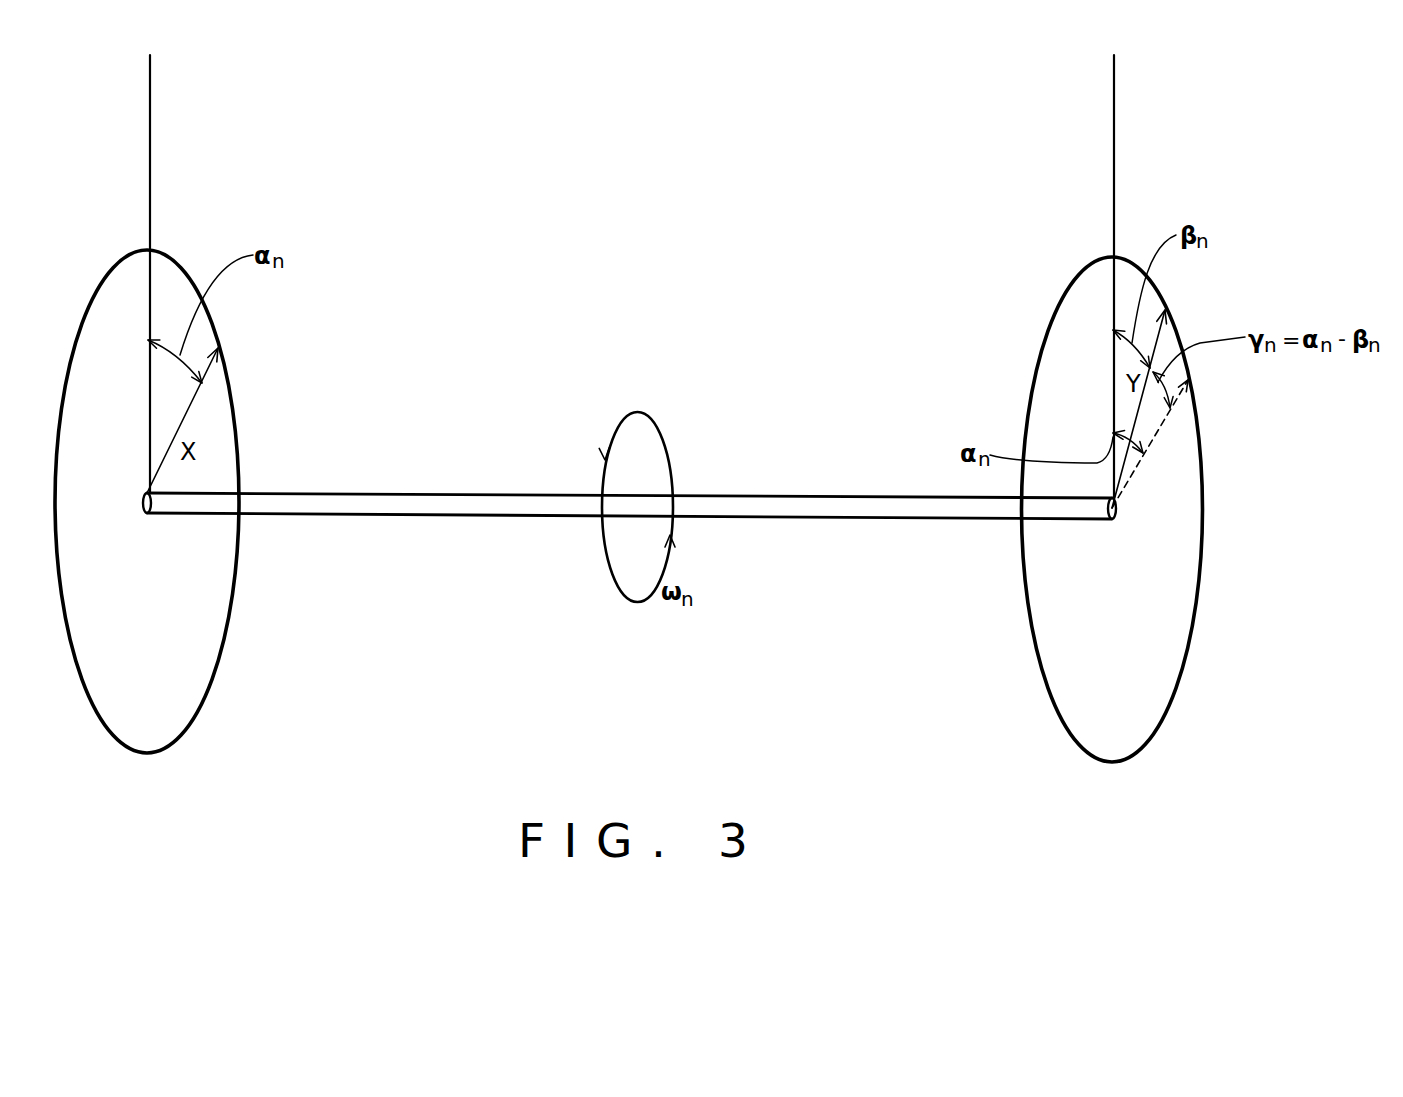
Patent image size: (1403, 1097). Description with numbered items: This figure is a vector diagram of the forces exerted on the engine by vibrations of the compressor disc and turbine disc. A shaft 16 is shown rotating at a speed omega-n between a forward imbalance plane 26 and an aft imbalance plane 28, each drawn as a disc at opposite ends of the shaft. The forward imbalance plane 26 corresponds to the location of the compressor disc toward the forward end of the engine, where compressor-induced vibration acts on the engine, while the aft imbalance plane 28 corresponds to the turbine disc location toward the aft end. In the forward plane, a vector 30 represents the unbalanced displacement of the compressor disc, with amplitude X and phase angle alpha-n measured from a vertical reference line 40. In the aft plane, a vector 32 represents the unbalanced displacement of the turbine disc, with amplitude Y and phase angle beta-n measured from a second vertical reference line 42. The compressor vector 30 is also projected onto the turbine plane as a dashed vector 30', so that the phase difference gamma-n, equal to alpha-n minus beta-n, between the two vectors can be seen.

The shaft 16 is at (447, 518).
The forward imbalance plane 26 is at (150, 753).
The aft imbalance plane 28 is at (1102, 762).
The unbalanced displacement vector 30 is at (222, 420).
The projected compressor vector 30' is at (1192, 444).
The unbalanced displacement vector 32 is at (1157, 343).
The first vertical reference line 40 is at (150, 154).
The second vertical reference line 42 is at (1114, 154).